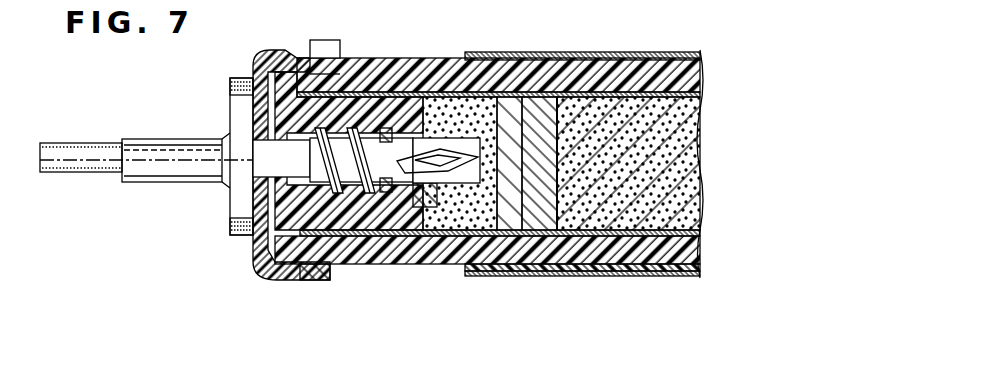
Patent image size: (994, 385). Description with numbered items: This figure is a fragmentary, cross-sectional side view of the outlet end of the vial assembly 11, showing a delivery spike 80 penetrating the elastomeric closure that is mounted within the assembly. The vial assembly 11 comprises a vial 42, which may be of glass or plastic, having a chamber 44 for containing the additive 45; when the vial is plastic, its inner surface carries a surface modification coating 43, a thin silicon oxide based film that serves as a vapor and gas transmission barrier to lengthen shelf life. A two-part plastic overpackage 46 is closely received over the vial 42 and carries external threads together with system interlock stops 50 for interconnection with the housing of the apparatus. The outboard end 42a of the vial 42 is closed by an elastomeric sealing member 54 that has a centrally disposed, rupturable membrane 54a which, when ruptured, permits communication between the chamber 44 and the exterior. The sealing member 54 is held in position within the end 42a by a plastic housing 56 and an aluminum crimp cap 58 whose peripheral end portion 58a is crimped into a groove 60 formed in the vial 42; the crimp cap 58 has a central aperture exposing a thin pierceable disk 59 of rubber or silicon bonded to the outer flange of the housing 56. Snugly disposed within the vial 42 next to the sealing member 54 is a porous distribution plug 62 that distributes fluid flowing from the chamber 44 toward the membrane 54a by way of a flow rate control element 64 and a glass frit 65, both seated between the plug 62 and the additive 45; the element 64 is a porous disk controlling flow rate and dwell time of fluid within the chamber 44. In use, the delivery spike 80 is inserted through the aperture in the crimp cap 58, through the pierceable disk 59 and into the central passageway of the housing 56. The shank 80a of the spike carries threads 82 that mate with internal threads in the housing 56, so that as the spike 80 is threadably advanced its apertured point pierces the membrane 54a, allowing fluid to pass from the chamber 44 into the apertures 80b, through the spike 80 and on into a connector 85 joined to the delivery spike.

The vial assembly 11 is at (624, 285).
The vial 42 is at (568, 262).
The outboard end 42a is at (368, 76).
The surface modification coating 43 is at (700, 95).
The chamber 44 is at (680, 228).
The additive 45 is at (700, 163).
The overpackage 46 is at (528, 264).
The system interlock stops 50 is at (337, 73).
The elastomeric sealing member 54 is at (378, 240).
The rupturable membrane 54a is at (438, 205).
The plastic housing 56 is at (410, 237).
The aluminum crimp cap 58 is at (263, 215).
The peripheral end portion 58a is at (307, 258).
The pierceable disk 59 is at (275, 101).
The groove 60 is at (340, 58).
The porous distribution plug 62 is at (498, 206).
The flow rate control element 64 is at (500, 144).
The glass frit 65 is at (556, 117).
The delivery spike 80 is at (160, 127).
The shank 80a is at (460, 163).
The apertures 80b is at (513, 172).
The threads 82 is at (320, 150).
The connector 85 is at (62, 172).